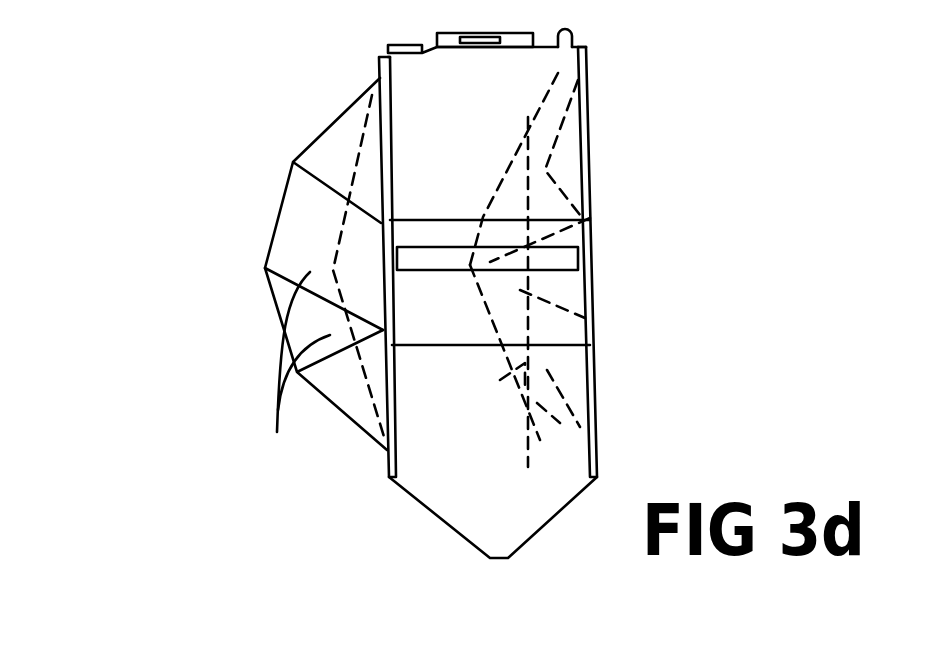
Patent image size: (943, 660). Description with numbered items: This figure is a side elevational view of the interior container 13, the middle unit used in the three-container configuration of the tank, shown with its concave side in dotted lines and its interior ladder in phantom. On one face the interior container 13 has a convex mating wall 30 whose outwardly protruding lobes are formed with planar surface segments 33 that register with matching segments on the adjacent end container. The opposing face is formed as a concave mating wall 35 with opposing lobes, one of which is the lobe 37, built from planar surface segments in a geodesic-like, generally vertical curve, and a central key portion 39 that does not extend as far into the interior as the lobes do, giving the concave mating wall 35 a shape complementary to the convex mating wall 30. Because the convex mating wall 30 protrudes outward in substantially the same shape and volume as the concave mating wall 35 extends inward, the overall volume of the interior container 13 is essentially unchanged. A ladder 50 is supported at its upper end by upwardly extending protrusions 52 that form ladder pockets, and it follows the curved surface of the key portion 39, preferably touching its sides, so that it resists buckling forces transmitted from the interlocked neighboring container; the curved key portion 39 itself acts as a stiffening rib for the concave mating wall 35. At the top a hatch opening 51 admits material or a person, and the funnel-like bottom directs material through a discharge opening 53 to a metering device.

The interior container 13 is at (266, 94).
The convex mating wall 30 is at (225, 267).
The planar surface segments 33 is at (340, 383).
The concave mating wall 35 is at (630, 279).
The lobe 37 is at (588, 312).
The central key portion 39 is at (592, 219).
The ladder 50 is at (547, 95).
The hatch opening 51 is at (531, 28).
The upwardly extending protrusions 52 is at (573, 37).
The discharge opening 53 is at (495, 560).